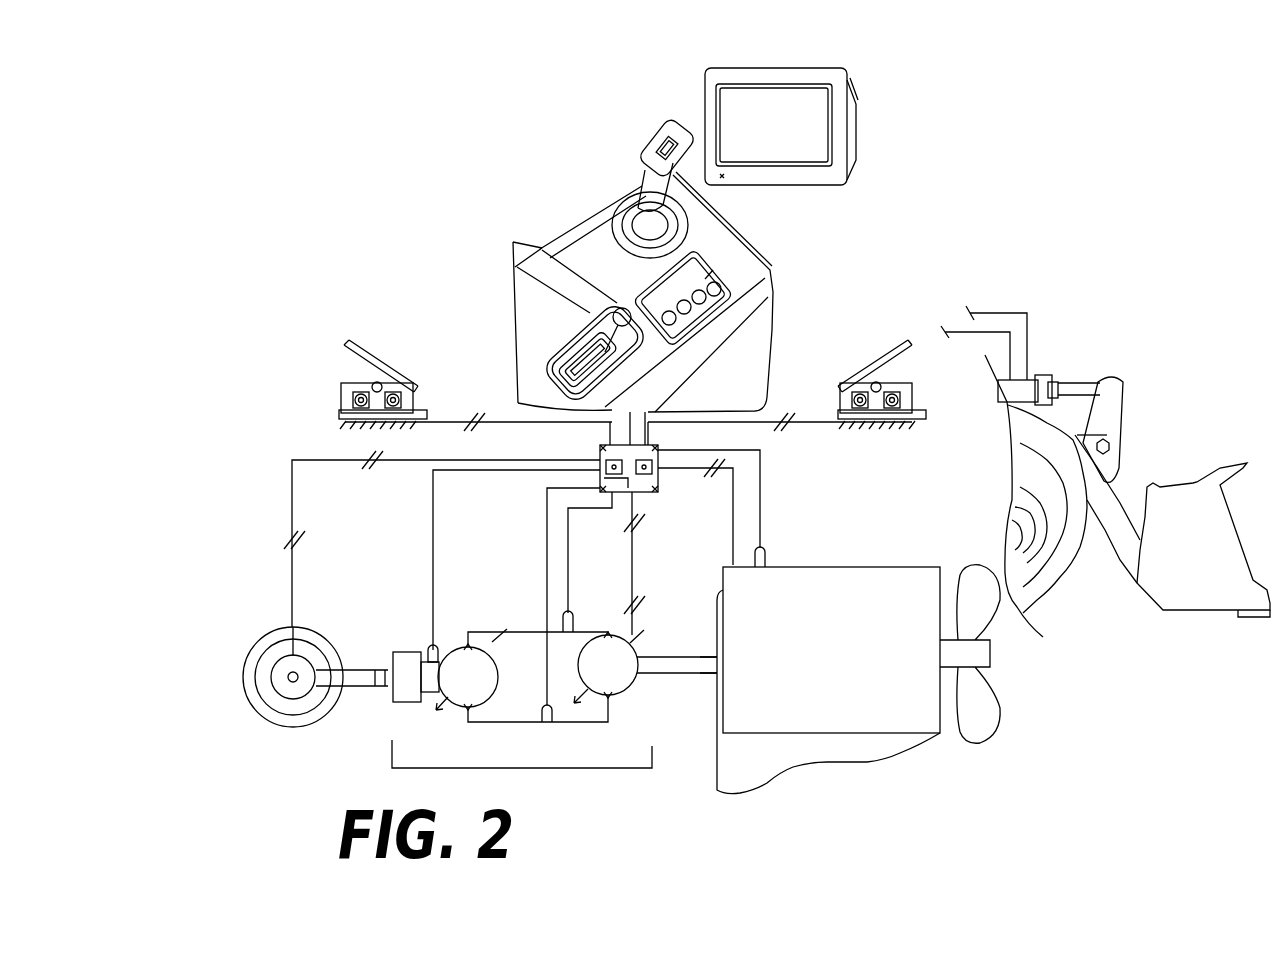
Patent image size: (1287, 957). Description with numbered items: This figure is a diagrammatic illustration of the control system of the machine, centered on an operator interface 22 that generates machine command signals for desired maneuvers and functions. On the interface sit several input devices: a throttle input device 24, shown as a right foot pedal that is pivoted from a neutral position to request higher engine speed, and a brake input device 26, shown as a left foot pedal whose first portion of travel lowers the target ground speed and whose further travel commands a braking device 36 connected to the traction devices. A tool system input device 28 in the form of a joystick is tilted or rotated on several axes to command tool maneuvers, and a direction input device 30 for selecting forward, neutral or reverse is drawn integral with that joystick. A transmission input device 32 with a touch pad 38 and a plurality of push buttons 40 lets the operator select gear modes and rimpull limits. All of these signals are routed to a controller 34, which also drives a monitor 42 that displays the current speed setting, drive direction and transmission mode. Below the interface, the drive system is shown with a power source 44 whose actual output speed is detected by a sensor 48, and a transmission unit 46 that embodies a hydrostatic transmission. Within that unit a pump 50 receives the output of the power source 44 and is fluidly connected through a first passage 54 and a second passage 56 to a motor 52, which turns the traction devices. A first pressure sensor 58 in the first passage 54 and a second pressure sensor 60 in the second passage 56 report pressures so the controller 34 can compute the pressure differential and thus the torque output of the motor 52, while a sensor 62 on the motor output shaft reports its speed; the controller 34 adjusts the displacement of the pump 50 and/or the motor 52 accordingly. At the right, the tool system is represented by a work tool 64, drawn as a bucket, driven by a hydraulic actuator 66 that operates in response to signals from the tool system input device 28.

The operator interface 22 is at (508, 188).
The throttle input device 24 is at (868, 372).
The brake input device 26 is at (386, 376).
The tool system input device 28 is at (625, 178).
The direction input device 30 is at (660, 128).
The transmission input device 32 is at (707, 277).
The controller 34 is at (661, 490).
The braking device 36 is at (270, 665).
The touch pad 38 is at (680, 297).
The push buttons 40 is at (718, 300).
The monitor 42 is at (784, 134).
The power source 44 is at (838, 661).
The transmission unit 46 is at (600, 778).
The sensor 48 is at (766, 557).
The pump 50 is at (618, 673).
The motor 52 is at (478, 685).
The first passage 54 is at (496, 628).
The second passage 56 is at (588, 725).
The first pressure sensor 58 is at (547, 712).
The second pressure sensor 60 is at (575, 612).
The sensor 62 is at (430, 655).
The work tool 64 is at (1205, 557).
The hydraulic actuator 66 is at (947, 298).